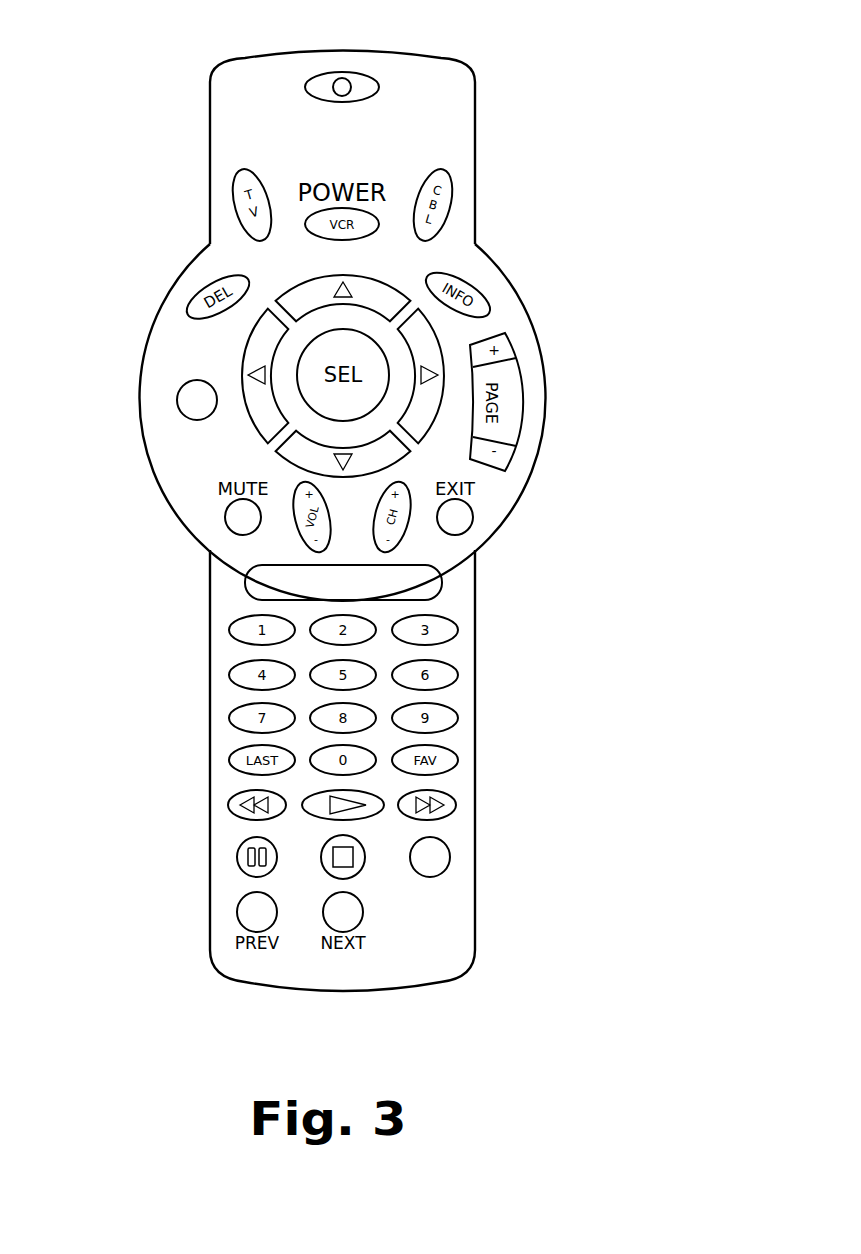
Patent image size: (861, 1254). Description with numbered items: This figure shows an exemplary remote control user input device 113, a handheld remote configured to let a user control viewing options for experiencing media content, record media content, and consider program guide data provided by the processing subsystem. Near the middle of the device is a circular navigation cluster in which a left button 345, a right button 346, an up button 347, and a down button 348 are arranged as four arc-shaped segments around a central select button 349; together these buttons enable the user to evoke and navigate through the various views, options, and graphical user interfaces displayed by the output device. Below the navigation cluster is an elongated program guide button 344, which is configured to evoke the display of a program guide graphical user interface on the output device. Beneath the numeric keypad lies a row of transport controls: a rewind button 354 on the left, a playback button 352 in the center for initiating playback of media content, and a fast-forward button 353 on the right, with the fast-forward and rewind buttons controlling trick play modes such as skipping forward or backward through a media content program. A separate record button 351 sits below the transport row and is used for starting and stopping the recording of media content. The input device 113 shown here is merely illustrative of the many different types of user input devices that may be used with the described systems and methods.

The remote control user input device 113 is at (475, 85).
The program guide button 344 is at (442, 583).
The left button 345 is at (246, 375).
The right button 346 is at (440, 338).
The up button 347 is at (300, 286).
The down button 348 is at (403, 440).
The select button 349 is at (297, 375).
The record button 351 is at (448, 866).
The playback button 352 is at (367, 818).
The fast-forward button 353 is at (456, 805).
The rewind button 354 is at (228, 806).